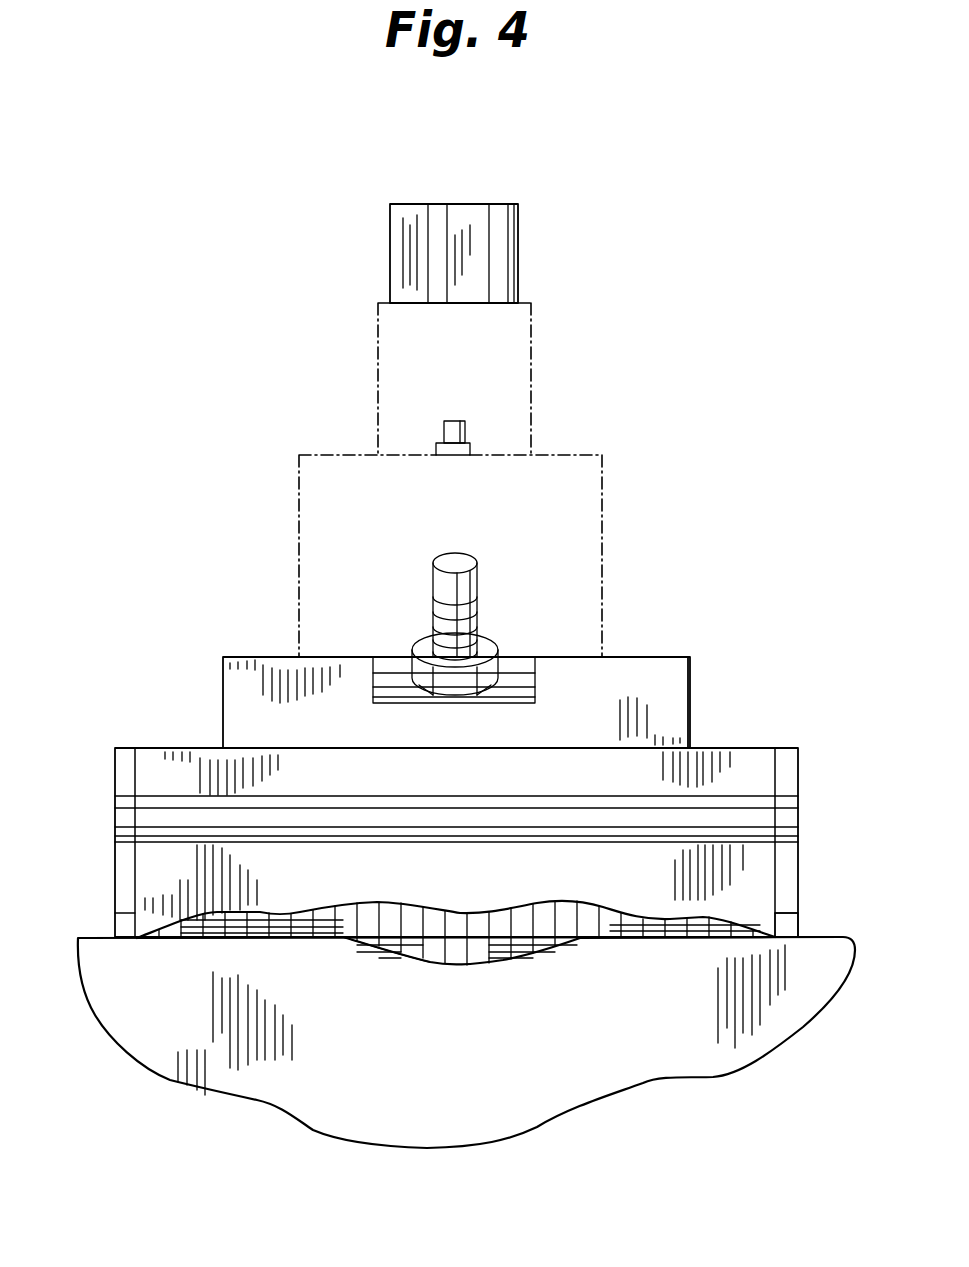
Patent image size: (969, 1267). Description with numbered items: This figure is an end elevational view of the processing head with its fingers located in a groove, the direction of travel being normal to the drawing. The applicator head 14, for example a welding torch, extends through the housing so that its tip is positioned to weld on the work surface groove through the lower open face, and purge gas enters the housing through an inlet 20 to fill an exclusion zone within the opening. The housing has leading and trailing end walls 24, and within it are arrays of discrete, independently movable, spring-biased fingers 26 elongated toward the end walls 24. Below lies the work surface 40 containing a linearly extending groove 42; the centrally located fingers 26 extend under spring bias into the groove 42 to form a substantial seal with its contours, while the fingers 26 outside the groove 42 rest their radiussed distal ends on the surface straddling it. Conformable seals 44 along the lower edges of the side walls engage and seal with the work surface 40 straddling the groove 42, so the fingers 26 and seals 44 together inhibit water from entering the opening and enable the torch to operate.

The applicator head 14 is at (295, 453).
The inlet 20 is at (438, 597).
The end walls 24 is at (167, 867).
The fingers 26 is at (468, 947).
The work surface 40 is at (93, 937).
The groove 42 is at (408, 957).
The conformable seals 44 is at (788, 923).